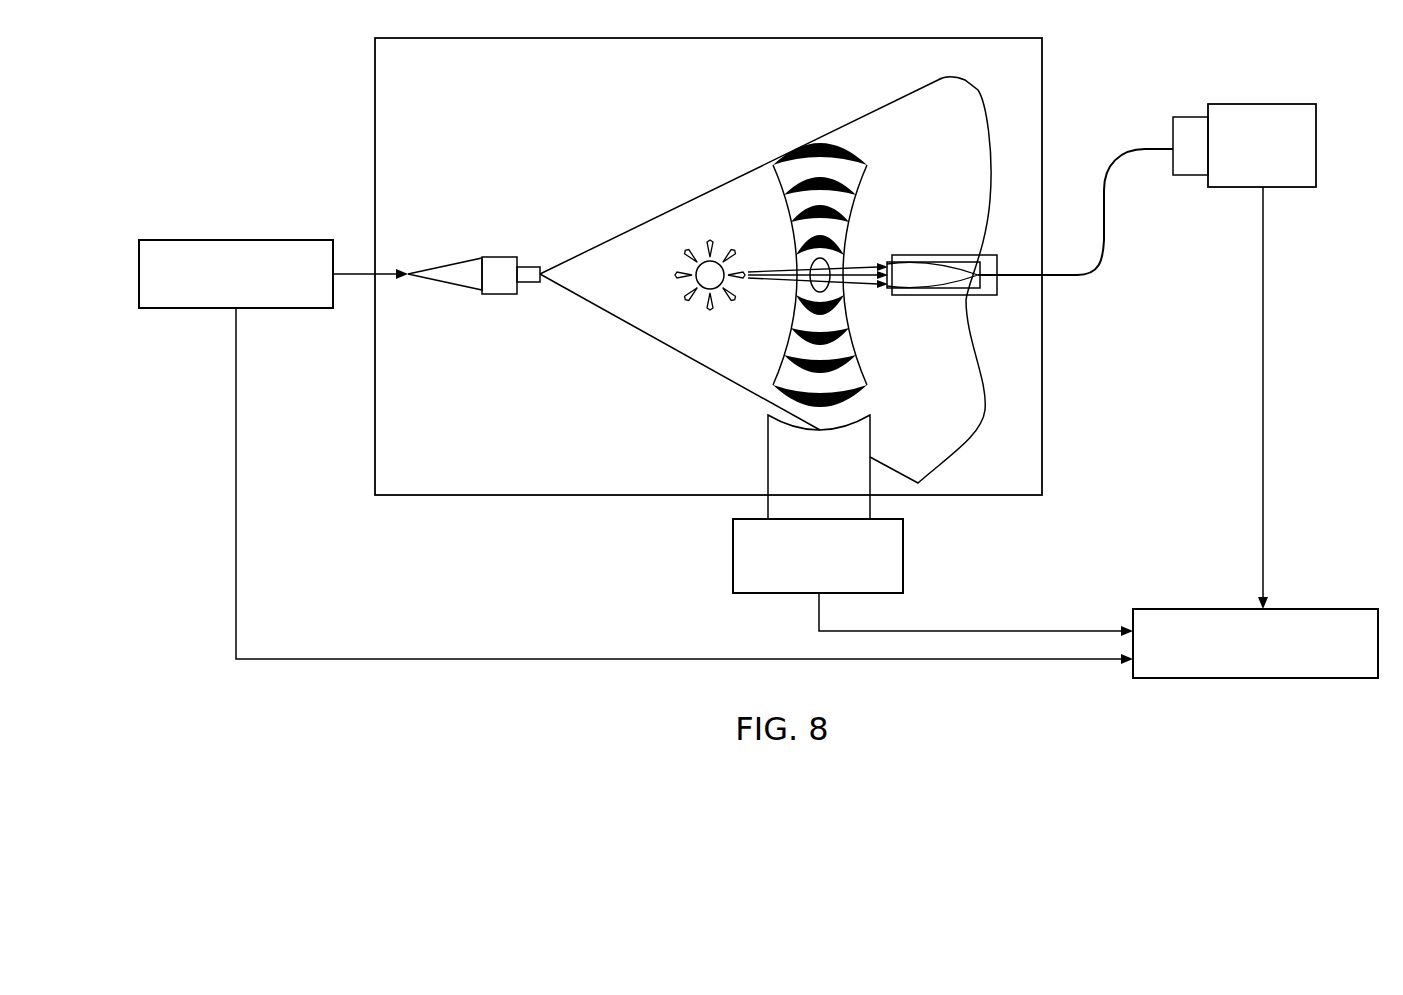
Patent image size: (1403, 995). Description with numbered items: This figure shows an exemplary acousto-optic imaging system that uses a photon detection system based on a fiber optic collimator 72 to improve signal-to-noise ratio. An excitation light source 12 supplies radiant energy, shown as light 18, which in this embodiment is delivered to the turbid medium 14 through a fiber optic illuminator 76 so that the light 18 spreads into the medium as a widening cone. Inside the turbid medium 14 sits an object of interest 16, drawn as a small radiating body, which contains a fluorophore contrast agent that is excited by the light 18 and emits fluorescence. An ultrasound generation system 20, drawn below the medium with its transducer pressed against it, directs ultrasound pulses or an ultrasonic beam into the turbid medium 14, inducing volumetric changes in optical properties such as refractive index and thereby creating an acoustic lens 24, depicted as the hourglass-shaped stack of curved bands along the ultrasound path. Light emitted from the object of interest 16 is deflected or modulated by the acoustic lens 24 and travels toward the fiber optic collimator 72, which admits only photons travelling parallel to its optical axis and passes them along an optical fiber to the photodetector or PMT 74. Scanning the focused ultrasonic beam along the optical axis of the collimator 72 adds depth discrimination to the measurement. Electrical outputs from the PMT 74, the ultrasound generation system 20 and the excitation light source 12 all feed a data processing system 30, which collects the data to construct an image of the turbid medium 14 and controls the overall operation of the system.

The excitation light source 12 is at (230, 240).
The turbid medium 14 is at (912, 38).
The object of interest 16 is at (712, 312).
The light 18 is at (677, 211).
The ultrasound generation system 20 is at (905, 556).
The acoustic lens 24 is at (868, 165).
The data processing system 30 is at (1312, 608).
The fiber optic collimator 72 is at (985, 256).
The PMT 74 is at (1290, 104).
The fiber optic illuminator 76 is at (447, 262).